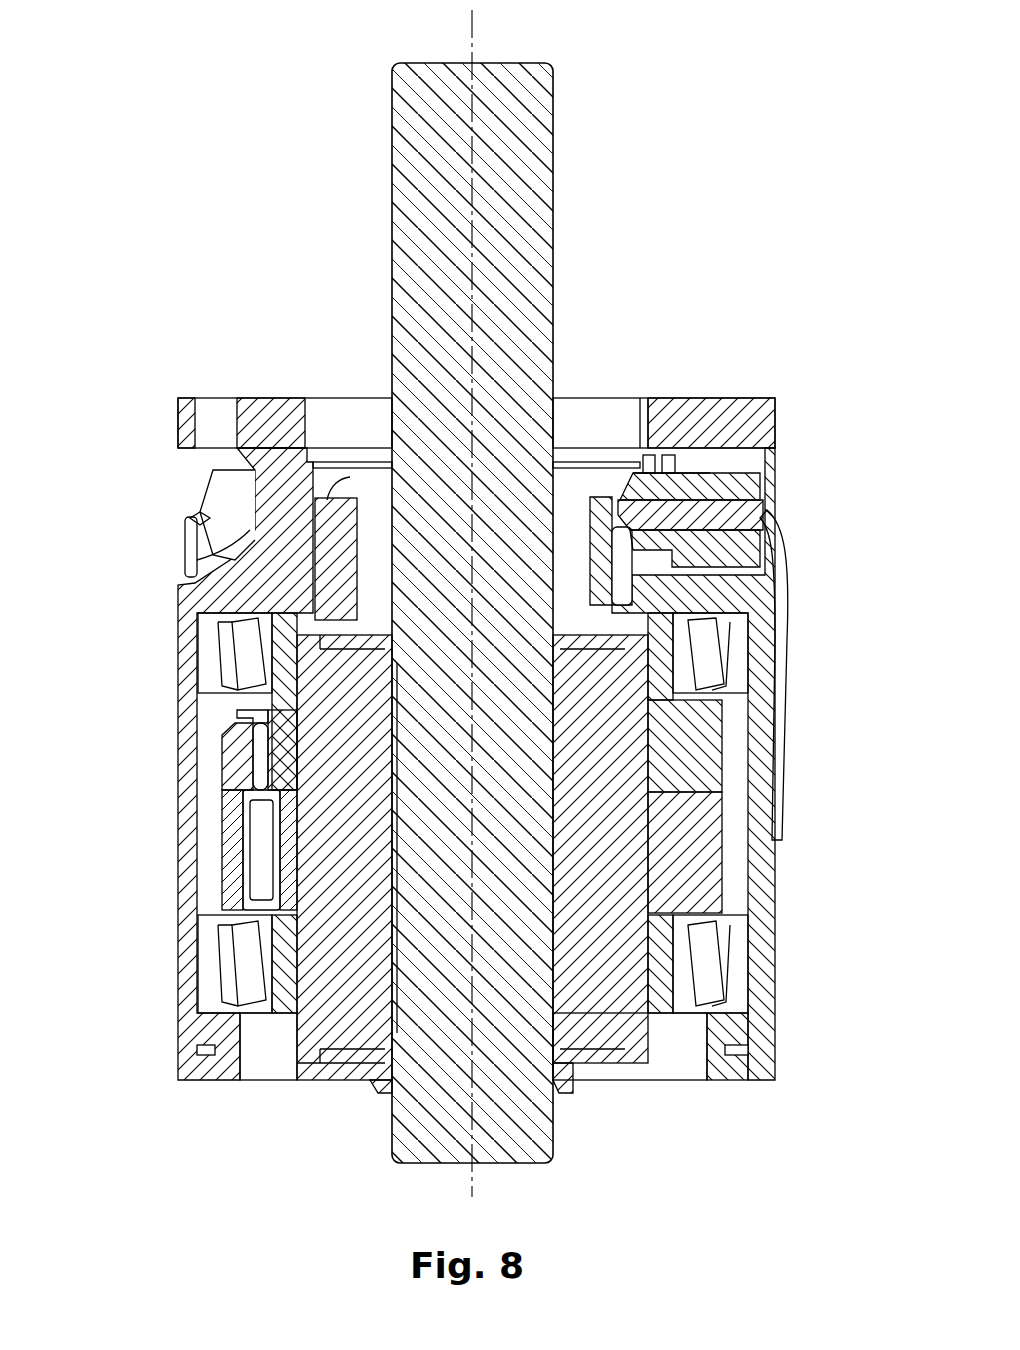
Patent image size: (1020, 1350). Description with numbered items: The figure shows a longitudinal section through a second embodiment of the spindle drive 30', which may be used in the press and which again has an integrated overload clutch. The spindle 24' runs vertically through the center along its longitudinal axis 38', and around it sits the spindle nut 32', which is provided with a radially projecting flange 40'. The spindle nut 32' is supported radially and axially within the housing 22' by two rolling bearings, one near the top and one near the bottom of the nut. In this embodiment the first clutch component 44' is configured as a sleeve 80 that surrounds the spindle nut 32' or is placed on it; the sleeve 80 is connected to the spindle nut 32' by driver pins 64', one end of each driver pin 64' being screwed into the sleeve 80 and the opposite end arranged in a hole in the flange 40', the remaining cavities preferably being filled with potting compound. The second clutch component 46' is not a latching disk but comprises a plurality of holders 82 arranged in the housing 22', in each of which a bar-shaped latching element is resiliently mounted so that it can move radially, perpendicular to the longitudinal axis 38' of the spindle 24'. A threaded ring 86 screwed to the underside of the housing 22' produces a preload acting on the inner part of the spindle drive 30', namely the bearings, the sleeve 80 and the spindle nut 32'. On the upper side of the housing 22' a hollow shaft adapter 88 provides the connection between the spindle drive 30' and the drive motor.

The longitudinal axis 38' is at (519, 600).
The spindle 24' is at (512, 613).
The spindle drive 30' is at (763, 66).
The hollow shaft adapter 88 is at (760, 420).
The second clutch component 46' is at (753, 647).
The holder 82 is at (735, 472).
The first clutch component 44' is at (159, 523).
The sleeve 80 is at (258, 512).
The housing 22' is at (226, 764).
The spindle nut 32' is at (575, 864).
The driver pin 64' is at (196, 810).
The flange 40' is at (751, 852).
The threaded ring 86 is at (745, 1075).